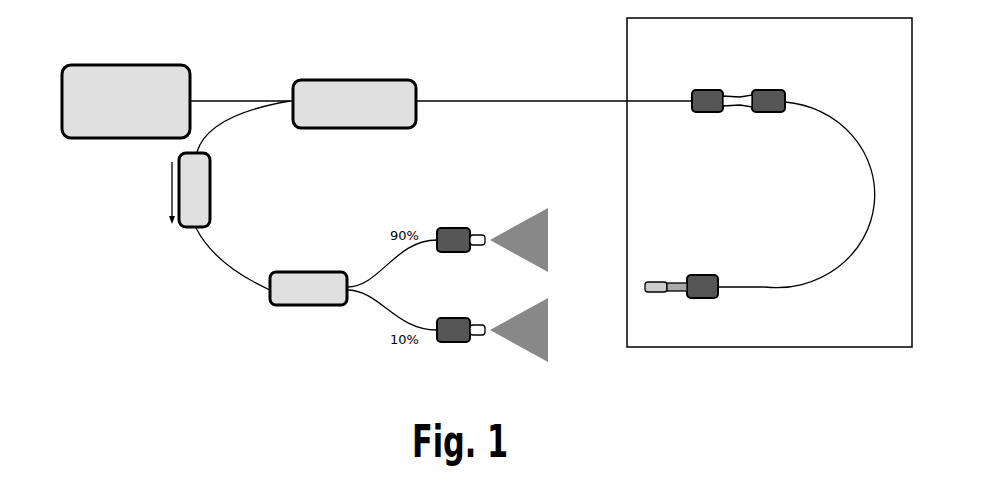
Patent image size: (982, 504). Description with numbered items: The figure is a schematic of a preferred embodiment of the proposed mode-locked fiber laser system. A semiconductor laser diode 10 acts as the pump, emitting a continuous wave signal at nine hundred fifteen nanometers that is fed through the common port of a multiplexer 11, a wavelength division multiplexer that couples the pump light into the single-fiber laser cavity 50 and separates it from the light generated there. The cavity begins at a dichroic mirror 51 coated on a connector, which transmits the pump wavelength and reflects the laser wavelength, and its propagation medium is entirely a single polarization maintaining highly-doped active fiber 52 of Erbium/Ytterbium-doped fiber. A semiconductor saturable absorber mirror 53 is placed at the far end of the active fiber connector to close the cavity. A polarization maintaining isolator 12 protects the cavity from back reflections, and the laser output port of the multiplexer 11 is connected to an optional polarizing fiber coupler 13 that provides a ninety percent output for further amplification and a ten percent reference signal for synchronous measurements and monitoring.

The semiconductor laser diode 10 is at (85, 64).
The multiplexer 11 is at (323, 79).
The polarization maintaining isolator 12 is at (188, 230).
The polarizing fiber coupler 13 is at (280, 306).
The single-fiber laser cavity 50 is at (753, 182).
The dichroic mirror 51 is at (733, 70).
The highly-doped active fiber 52 is at (878, 228).
The semiconductor saturable absorber mirror 53 is at (700, 272).